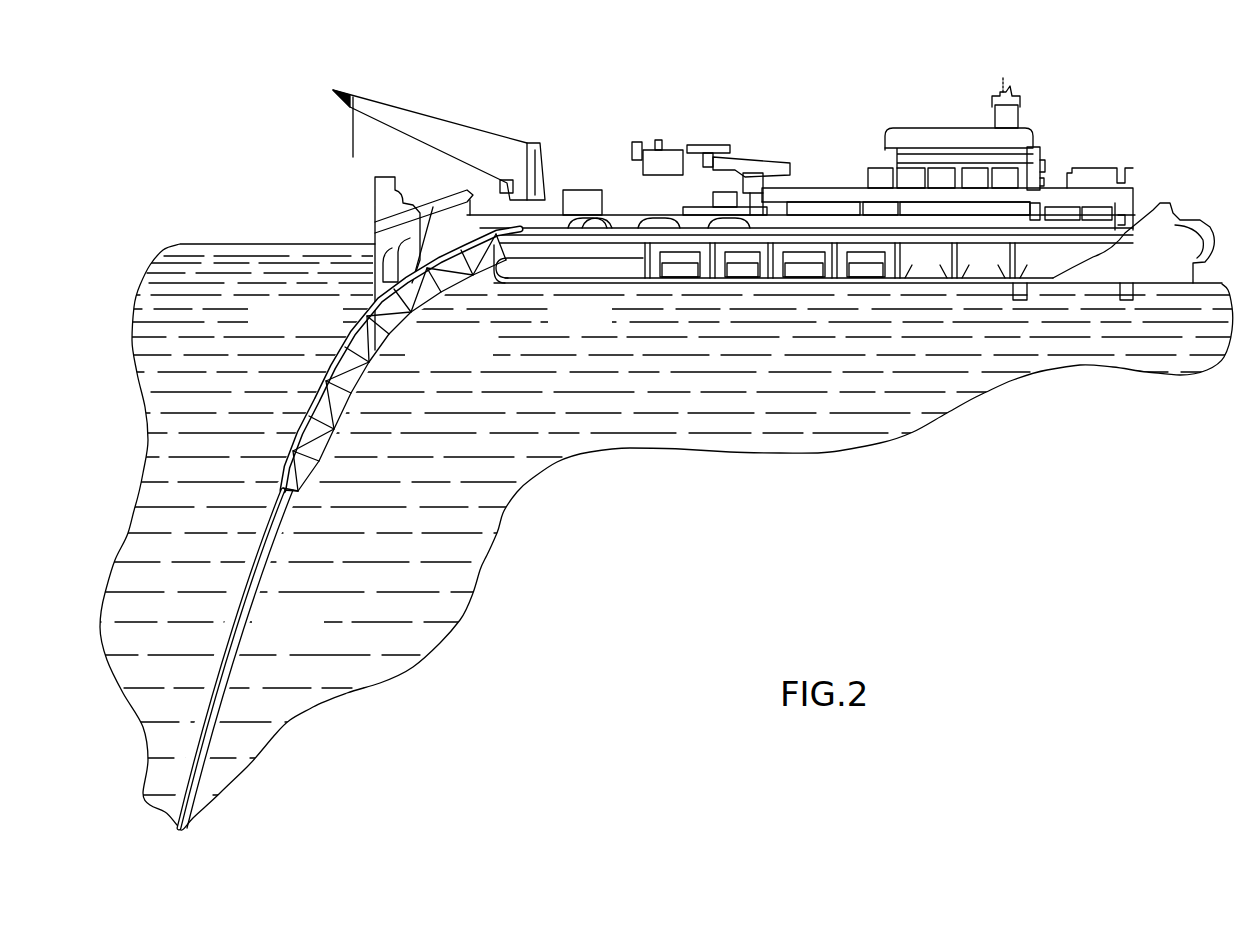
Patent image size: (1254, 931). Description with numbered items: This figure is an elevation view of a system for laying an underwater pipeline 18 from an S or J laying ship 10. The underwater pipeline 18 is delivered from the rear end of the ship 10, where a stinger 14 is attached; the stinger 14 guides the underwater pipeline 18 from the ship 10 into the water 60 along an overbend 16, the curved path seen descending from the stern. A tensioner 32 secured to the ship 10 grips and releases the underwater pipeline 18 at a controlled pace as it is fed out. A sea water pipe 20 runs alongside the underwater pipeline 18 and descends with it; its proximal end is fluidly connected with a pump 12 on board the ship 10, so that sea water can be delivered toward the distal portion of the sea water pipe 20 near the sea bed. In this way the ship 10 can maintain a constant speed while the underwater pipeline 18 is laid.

The ship 10 is at (1091, 72).
The pump 12 is at (570, 190).
The stinger 14 is at (410, 332).
The overbend 16 is at (338, 340).
The underwater pipeline 18 is at (243, 600).
The sea water pipe 20 is at (256, 600).
The tensioner 32 is at (593, 225).
The water 60 is at (257, 244).